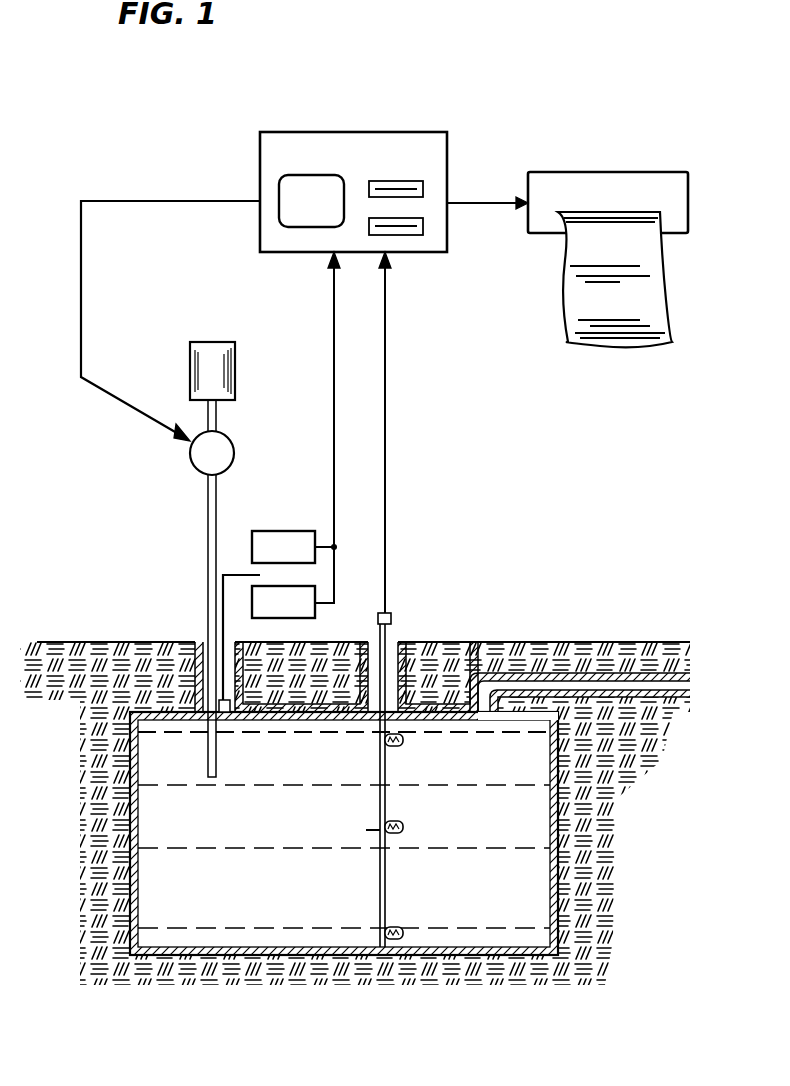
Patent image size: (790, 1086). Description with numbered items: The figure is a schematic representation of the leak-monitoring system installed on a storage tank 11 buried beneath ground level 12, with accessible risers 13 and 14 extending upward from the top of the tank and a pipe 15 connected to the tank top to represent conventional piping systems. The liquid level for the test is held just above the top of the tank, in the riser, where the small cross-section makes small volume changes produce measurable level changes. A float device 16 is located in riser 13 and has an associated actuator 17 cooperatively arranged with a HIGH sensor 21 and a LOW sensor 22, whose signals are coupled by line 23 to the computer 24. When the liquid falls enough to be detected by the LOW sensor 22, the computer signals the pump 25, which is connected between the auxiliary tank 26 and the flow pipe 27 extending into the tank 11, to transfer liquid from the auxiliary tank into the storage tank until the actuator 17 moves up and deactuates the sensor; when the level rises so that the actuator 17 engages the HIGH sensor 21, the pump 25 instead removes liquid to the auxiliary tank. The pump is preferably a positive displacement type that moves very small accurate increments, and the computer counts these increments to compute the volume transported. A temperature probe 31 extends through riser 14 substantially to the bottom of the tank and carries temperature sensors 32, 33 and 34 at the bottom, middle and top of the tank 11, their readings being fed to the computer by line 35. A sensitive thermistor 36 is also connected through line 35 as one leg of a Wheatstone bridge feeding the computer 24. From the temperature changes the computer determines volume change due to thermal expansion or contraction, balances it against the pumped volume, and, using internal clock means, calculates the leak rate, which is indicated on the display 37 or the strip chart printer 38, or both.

The storage tank 11 is at (130, 762).
The ground level 12 is at (97, 642).
The riser 13 is at (226, 720).
The riser 14 is at (406, 702).
The pipe 15 is at (494, 708).
The float device 16 is at (236, 712).
The actuator 17 is at (256, 574).
The HIGH sensor 21 is at (280, 531).
The LOW sensor 22 is at (306, 575).
The line 23 is at (334, 298).
The computer 24 is at (410, 131).
The pump 25 is at (230, 452).
The auxiliary tank 26 is at (206, 342).
The flow pipe 27 is at (208, 574).
The temperature probe 31 is at (388, 896).
The temperature sensor 32 is at (401, 930).
The temperature sensor 33 is at (403, 826).
The temperature sensor 34 is at (404, 746).
The line 35 is at (385, 313).
The thermistor 36 is at (366, 830).
The display 37 is at (283, 187).
The strip chart printer 38 is at (632, 172).